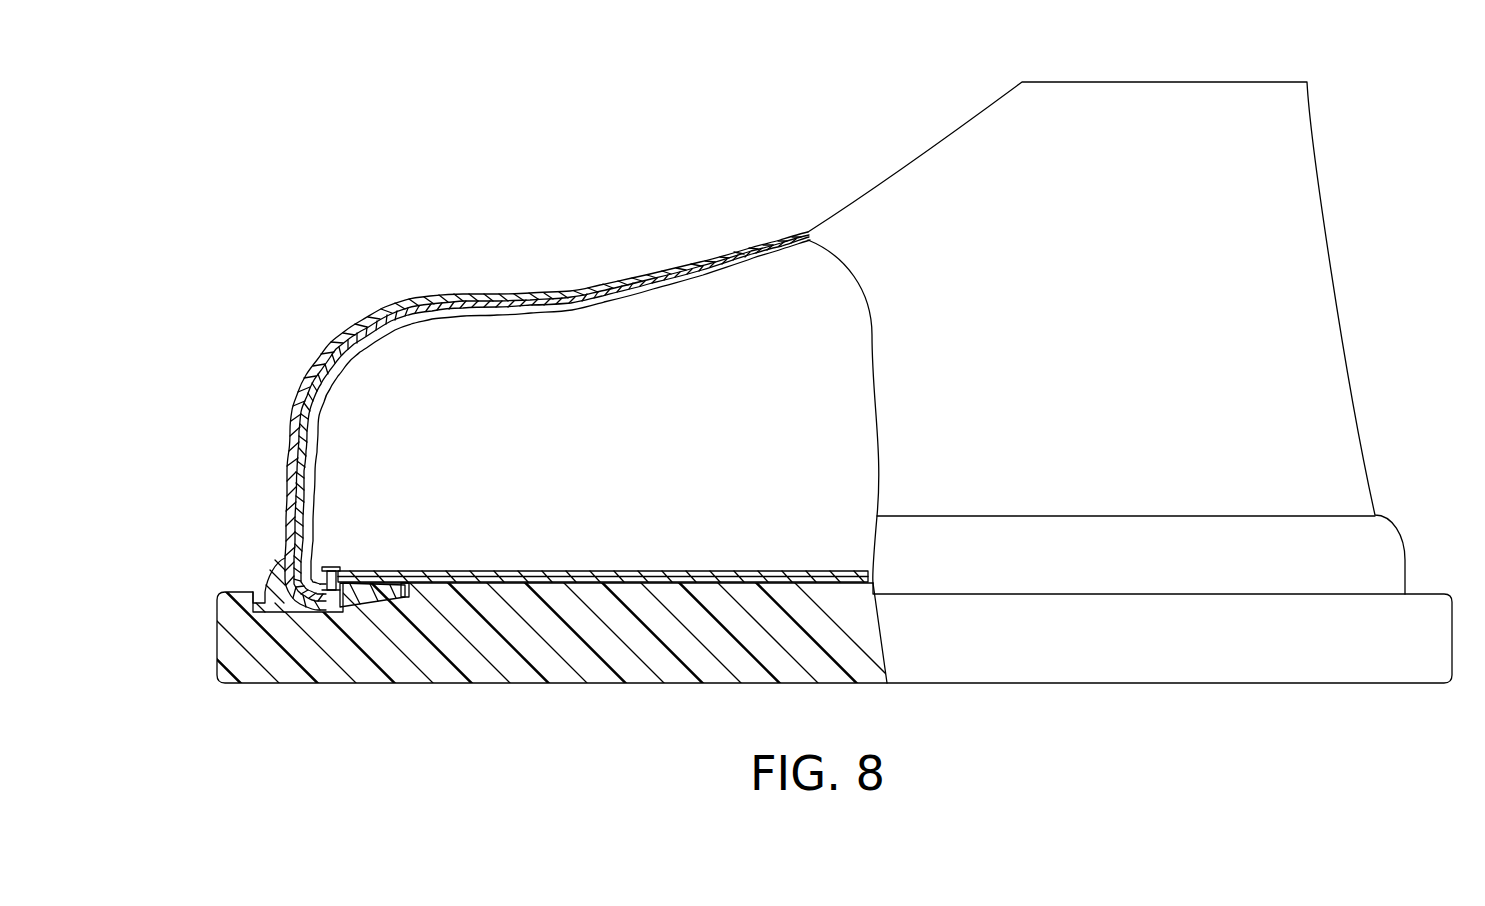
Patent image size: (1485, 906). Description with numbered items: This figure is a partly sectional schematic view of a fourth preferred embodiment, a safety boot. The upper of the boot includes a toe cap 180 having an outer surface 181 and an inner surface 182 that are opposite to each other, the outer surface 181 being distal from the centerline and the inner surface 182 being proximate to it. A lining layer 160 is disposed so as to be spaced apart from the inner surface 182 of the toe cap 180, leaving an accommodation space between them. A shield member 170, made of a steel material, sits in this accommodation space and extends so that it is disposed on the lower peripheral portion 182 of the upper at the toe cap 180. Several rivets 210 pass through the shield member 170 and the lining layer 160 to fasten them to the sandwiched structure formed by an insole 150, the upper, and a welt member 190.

The insole 150 is at (722, 572).
The lining layer 160 is at (572, 315).
The shield member 170 is at (475, 373).
The toe cap 180 is at (382, 304).
The outer surface 181 is at (287, 472).
The inner surface 182 is at (345, 333).
The welt member 190 is at (265, 562).
The rivets 210 is at (343, 540).